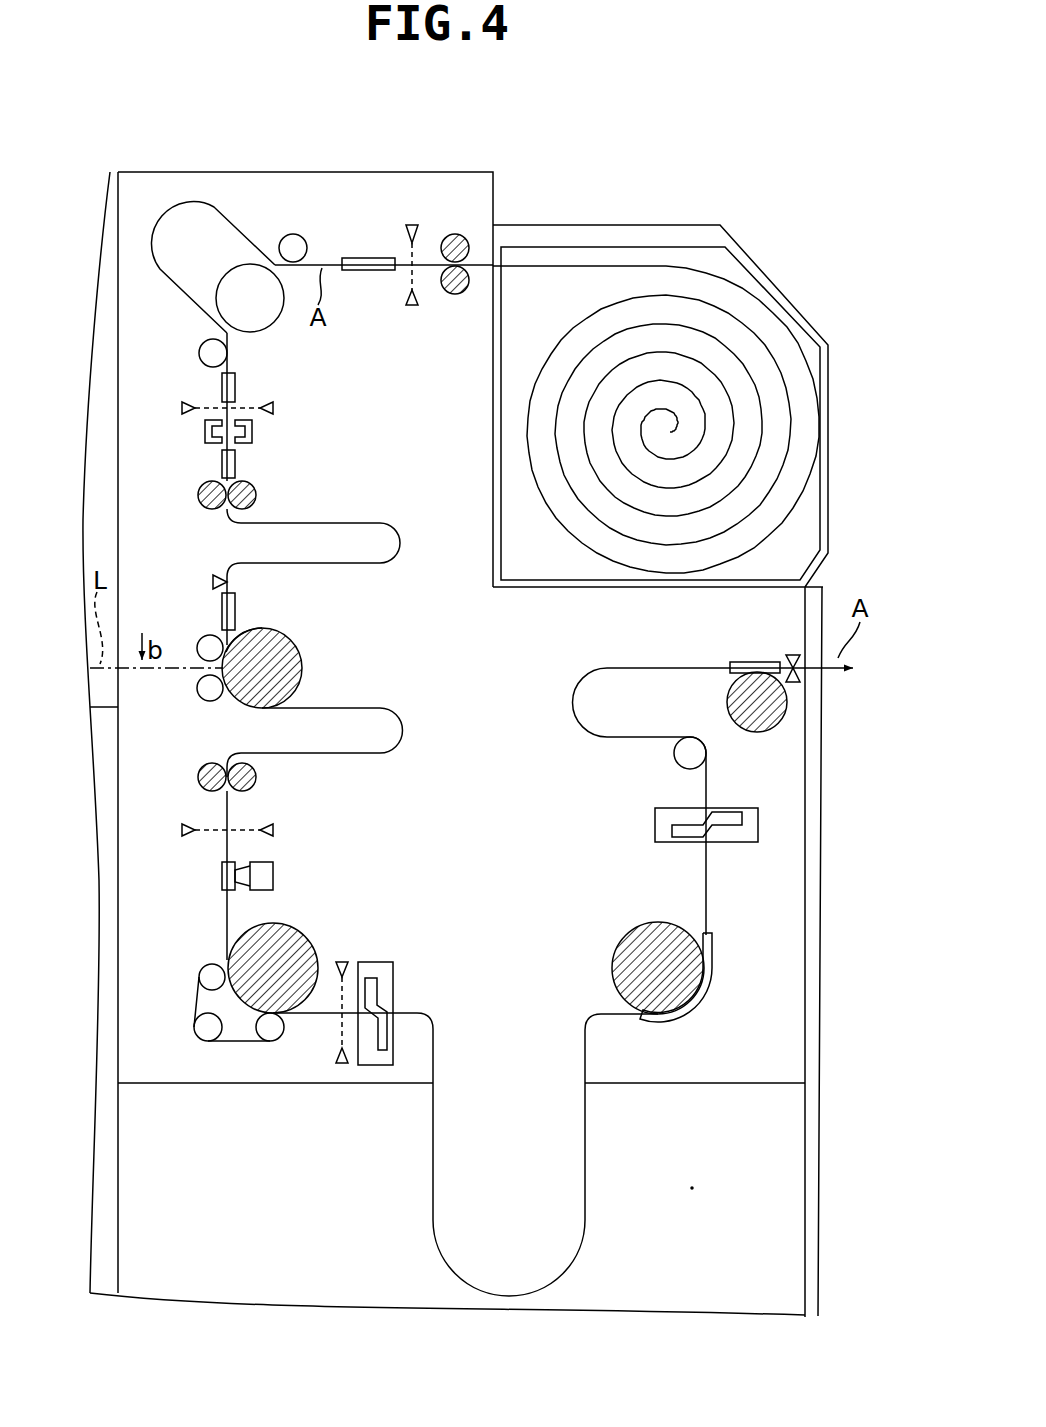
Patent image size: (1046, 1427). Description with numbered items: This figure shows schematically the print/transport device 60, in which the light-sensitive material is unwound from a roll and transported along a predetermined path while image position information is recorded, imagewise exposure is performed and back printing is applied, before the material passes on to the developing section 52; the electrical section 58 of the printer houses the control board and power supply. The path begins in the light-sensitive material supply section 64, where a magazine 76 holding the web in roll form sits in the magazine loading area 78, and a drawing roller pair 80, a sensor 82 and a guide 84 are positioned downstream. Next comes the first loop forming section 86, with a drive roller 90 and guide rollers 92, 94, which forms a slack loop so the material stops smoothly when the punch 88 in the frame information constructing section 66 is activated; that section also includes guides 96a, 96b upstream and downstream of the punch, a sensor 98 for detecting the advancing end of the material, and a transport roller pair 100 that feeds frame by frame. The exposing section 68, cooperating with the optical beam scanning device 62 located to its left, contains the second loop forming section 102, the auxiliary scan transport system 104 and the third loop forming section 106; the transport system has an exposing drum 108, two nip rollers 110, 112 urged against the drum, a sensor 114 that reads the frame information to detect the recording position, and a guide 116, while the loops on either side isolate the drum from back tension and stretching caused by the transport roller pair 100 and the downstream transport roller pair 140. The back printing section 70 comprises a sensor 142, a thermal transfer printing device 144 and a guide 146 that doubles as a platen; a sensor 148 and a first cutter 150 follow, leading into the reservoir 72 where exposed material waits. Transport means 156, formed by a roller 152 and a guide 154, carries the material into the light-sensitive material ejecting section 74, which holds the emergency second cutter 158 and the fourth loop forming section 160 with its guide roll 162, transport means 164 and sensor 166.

The developing section 52 is at (813, 870).
The electrical section 58 is at (103, 1058).
The print/transport device 60 is at (600, 186).
The optical beam scanning device 62 is at (106, 190).
The light-sensitive material supply section 64 is at (378, 306).
The frame information constructing section 66 is at (272, 434).
The exposing section 68 is at (421, 684).
The back printing section 70 is at (312, 855).
The reservoir 72 is at (668, 1166).
The light-sensitive material ejecting section 74 is at (600, 826).
The magazine 76 is at (694, 243).
The magazine loading area 78 is at (755, 263).
The drawing roller pair 80 is at (463, 236).
The sensor 82 is at (414, 224).
The guide 84 is at (373, 257).
The first loop forming section 86 is at (272, 210).
The punch 88 is at (205, 432).
The drive roller 90 is at (244, 290).
The guide roller 92 is at (296, 234).
The guide roller 94 is at (206, 363).
The guide 96a is at (236, 388).
The guide 96b is at (237, 462).
The sensor 98 is at (281, 406).
The transport roller pair 100 is at (207, 488).
The second loop forming section 102 is at (342, 580).
The auxiliary scan transport system 104 is at (312, 665).
The third loop forming section 106 is at (412, 750).
The exposing drum 108 is at (285, 631).
The nip roller 110 is at (200, 640).
The nip roller 112 is at (201, 698).
The sensor 114 is at (211, 581).
The guide 116 is at (236, 602).
The transport roller pair 140 is at (203, 766).
The sensor 142 is at (182, 828).
The printing device 144 is at (273, 884).
The guide 146 is at (222, 875).
The sensor 148 is at (342, 1066).
The first cutter 150 is at (394, 977).
The roller 152 is at (622, 963).
The guide 154 is at (713, 960).
The transport means 156 is at (711, 1025).
The second cutter 158 is at (720, 840).
The fourth loop forming section 160 is at (561, 664).
The guide roll 162 is at (674, 758).
The transport means 164 is at (757, 723).
The sensor 166 is at (800, 689).